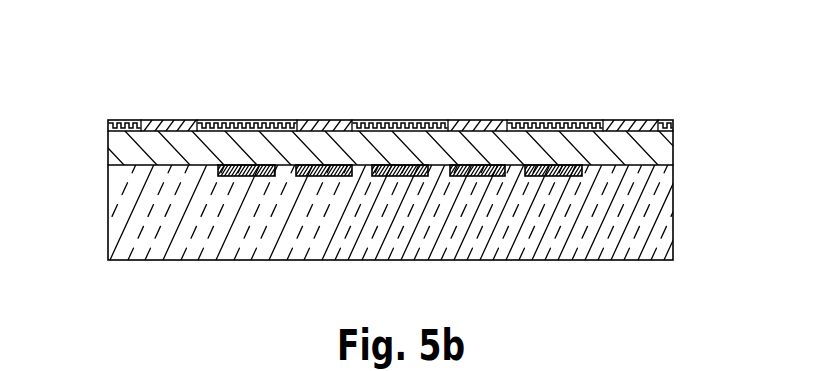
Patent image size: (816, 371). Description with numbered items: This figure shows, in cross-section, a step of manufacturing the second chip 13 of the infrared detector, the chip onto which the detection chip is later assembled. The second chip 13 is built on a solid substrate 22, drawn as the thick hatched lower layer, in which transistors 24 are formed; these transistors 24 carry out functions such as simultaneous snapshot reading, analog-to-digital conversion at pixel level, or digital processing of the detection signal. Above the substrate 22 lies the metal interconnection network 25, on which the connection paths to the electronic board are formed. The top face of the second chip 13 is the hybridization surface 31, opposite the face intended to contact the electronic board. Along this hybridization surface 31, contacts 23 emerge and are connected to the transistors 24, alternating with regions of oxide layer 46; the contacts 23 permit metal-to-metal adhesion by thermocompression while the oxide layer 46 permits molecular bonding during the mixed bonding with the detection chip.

The second chip 13 is at (627, 83).
The solid substrate 22 is at (123, 217).
The contacts 23 is at (473, 121).
The transistors 24 is at (248, 172).
The metal interconnection network 25 is at (122, 152).
The hybridization surface 31 is at (337, 102).
The oxide layer 46 is at (253, 120).